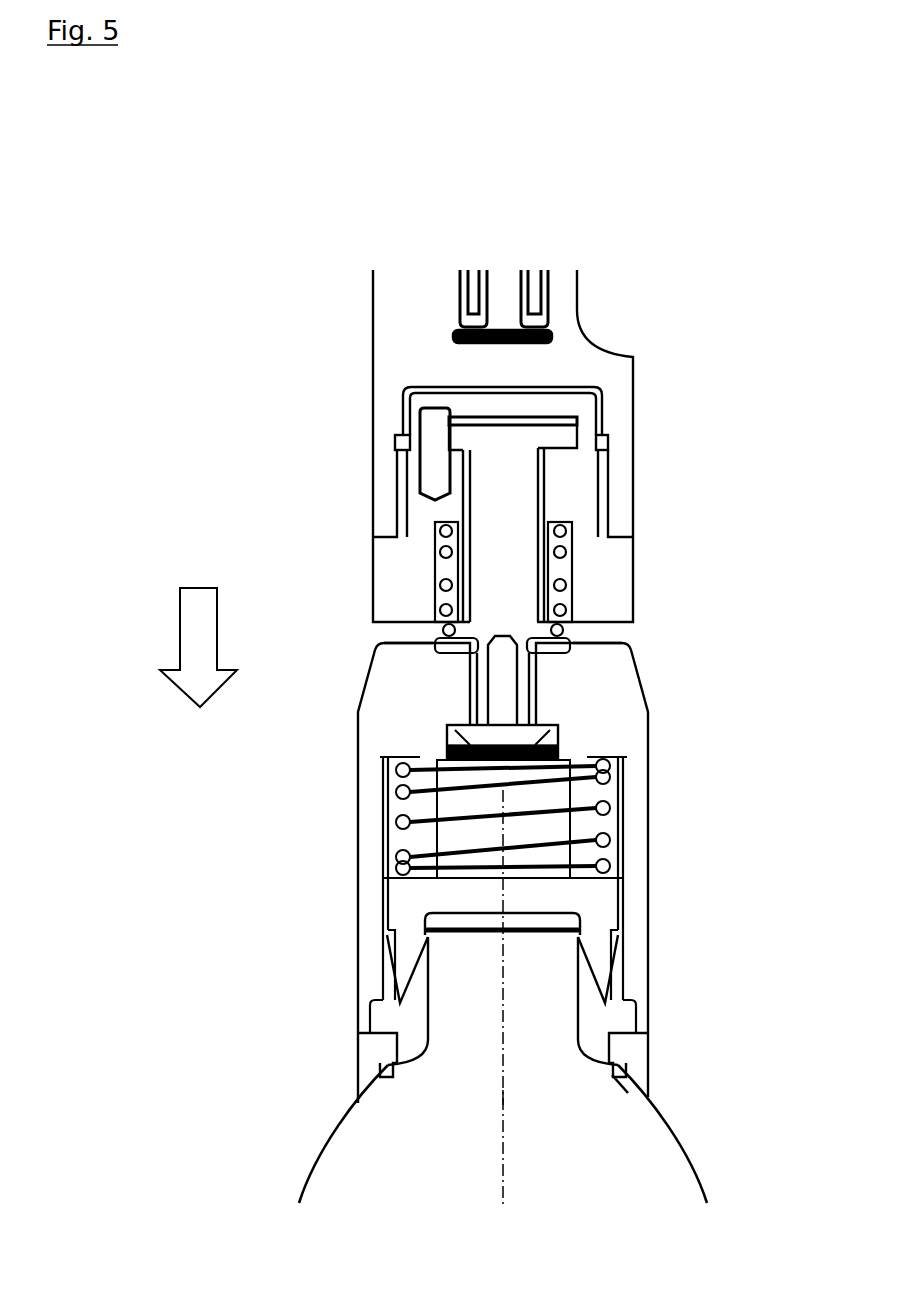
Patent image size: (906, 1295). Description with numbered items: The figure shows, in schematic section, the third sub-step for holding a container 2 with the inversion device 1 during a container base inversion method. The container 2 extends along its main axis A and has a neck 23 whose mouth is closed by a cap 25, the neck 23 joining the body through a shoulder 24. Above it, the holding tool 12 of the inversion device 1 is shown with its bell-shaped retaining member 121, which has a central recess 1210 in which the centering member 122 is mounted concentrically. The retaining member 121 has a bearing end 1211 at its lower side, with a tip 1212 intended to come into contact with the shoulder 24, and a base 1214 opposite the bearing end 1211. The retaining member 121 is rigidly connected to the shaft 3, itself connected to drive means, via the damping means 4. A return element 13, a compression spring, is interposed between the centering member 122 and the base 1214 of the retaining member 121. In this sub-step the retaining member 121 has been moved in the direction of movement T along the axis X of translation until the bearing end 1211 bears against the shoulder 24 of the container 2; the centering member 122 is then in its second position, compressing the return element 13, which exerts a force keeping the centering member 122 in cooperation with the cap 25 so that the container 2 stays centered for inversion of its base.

The inversion device 1 is at (200, 280).
The container 2 is at (273, 1170).
The shaft 3 is at (660, 350).
The damping means 4 is at (573, 578).
The holding tool 12 is at (700, 685).
The return element 13 is at (428, 822).
The neck 23 is at (393, 1012).
The shoulder 24 is at (618, 1096).
The cap 25 is at (585, 975).
The retaining member 121 is at (650, 738).
The centering member 122 is at (390, 908).
The central recess 1210 is at (602, 825).
The bearing end 1211 is at (333, 1065).
The tip 1212 is at (640, 1055).
The base 1214 is at (403, 678).
The direction of movement T is at (190, 612).
The axis of translation X is at (507, 888).
The main axis A is at (503, 1097).